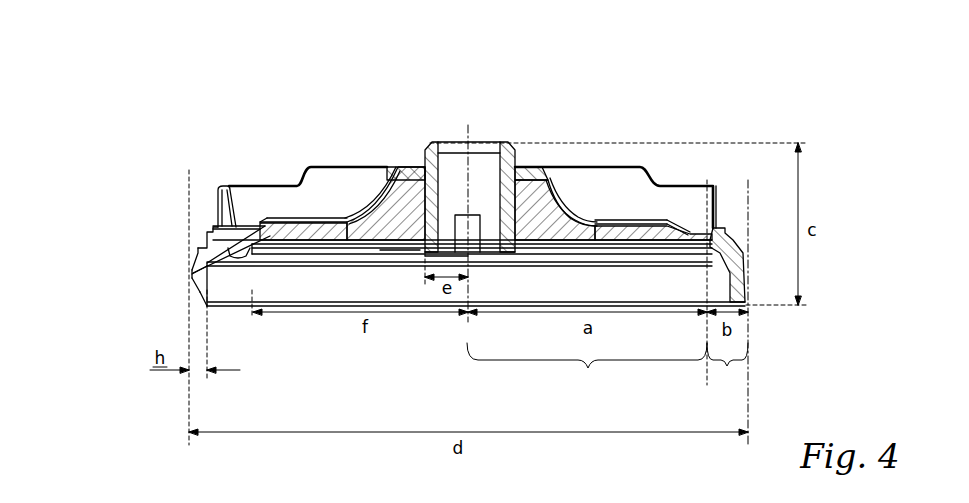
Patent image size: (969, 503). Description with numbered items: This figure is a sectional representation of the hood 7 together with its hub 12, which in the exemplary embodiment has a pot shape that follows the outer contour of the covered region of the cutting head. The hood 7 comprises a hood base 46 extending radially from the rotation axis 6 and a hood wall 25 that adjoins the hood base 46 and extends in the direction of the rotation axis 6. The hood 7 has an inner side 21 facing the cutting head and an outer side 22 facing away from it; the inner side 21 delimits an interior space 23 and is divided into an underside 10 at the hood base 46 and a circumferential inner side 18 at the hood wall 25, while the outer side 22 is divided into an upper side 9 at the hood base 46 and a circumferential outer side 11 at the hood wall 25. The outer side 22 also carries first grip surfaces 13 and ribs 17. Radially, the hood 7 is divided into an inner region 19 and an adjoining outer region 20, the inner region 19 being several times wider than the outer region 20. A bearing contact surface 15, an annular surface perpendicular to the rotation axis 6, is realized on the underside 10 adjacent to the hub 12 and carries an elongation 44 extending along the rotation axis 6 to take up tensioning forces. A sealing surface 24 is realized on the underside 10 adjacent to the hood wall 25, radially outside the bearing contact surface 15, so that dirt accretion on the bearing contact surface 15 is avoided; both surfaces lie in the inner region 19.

The rotation axis 6 is at (466, 135).
The hood 7 is at (662, 95).
The upper side 9 is at (300, 220).
The underside 10 is at (283, 233).
The circumferential outer side 11 is at (195, 276).
The hub 12 is at (512, 150).
The first grip surfaces 13 is at (192, 287).
The bearing contact surface 15 is at (398, 250).
The ribs 17 is at (357, 178).
The circumferential inner side 18 is at (193, 270).
The inner region 19 is at (587, 365).
The outer region 20 is at (727, 308).
The inner side 21 is at (328, 231).
The outer side 22 is at (194, 247).
The interior space 23 is at (478, 292).
The sealing surface 24 is at (241, 258).
The hood wall 25 is at (192, 296).
The elongation 44 is at (407, 210).
The hood base 46 is at (250, 235).